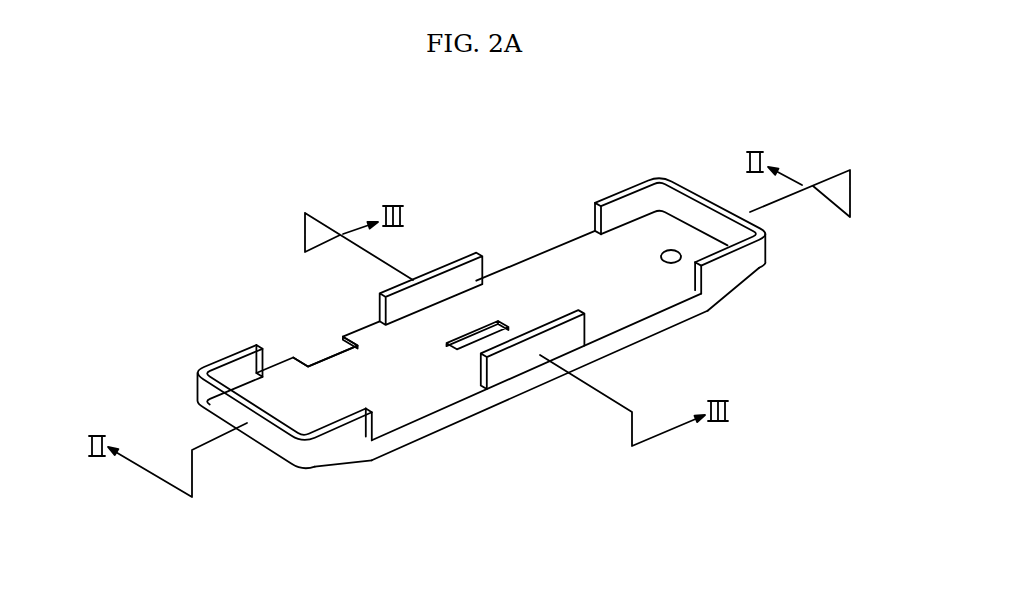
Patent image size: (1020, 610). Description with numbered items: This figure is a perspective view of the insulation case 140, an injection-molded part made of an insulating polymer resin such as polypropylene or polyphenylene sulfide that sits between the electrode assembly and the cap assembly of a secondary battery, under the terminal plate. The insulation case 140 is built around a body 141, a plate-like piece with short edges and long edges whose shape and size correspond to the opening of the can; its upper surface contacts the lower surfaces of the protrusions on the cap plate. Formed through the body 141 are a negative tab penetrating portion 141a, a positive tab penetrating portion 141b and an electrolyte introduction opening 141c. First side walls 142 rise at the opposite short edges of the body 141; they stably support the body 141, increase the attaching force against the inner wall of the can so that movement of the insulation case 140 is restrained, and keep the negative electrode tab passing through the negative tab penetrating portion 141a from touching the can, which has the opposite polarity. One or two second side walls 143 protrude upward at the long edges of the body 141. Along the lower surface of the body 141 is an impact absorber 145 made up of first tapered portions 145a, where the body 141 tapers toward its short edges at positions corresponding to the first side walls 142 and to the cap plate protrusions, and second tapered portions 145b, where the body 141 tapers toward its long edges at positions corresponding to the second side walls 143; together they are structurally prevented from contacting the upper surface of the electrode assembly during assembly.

The insulation case 140 is at (125, 215).
The body 141 is at (630, 317).
The negative tab penetrating portion 141a is at (487, 334).
The positive tab penetrating portion 141b is at (309, 361).
The electrolyte introduction opening 141c is at (670, 250).
The first side walls 142 is at (265, 432).
The second side walls 143 is at (397, 301).
The impact absorber 145 is at (573, 426).
The first tapered portions 145a is at (748, 290).
The second tapered portions 145b is at (540, 424).